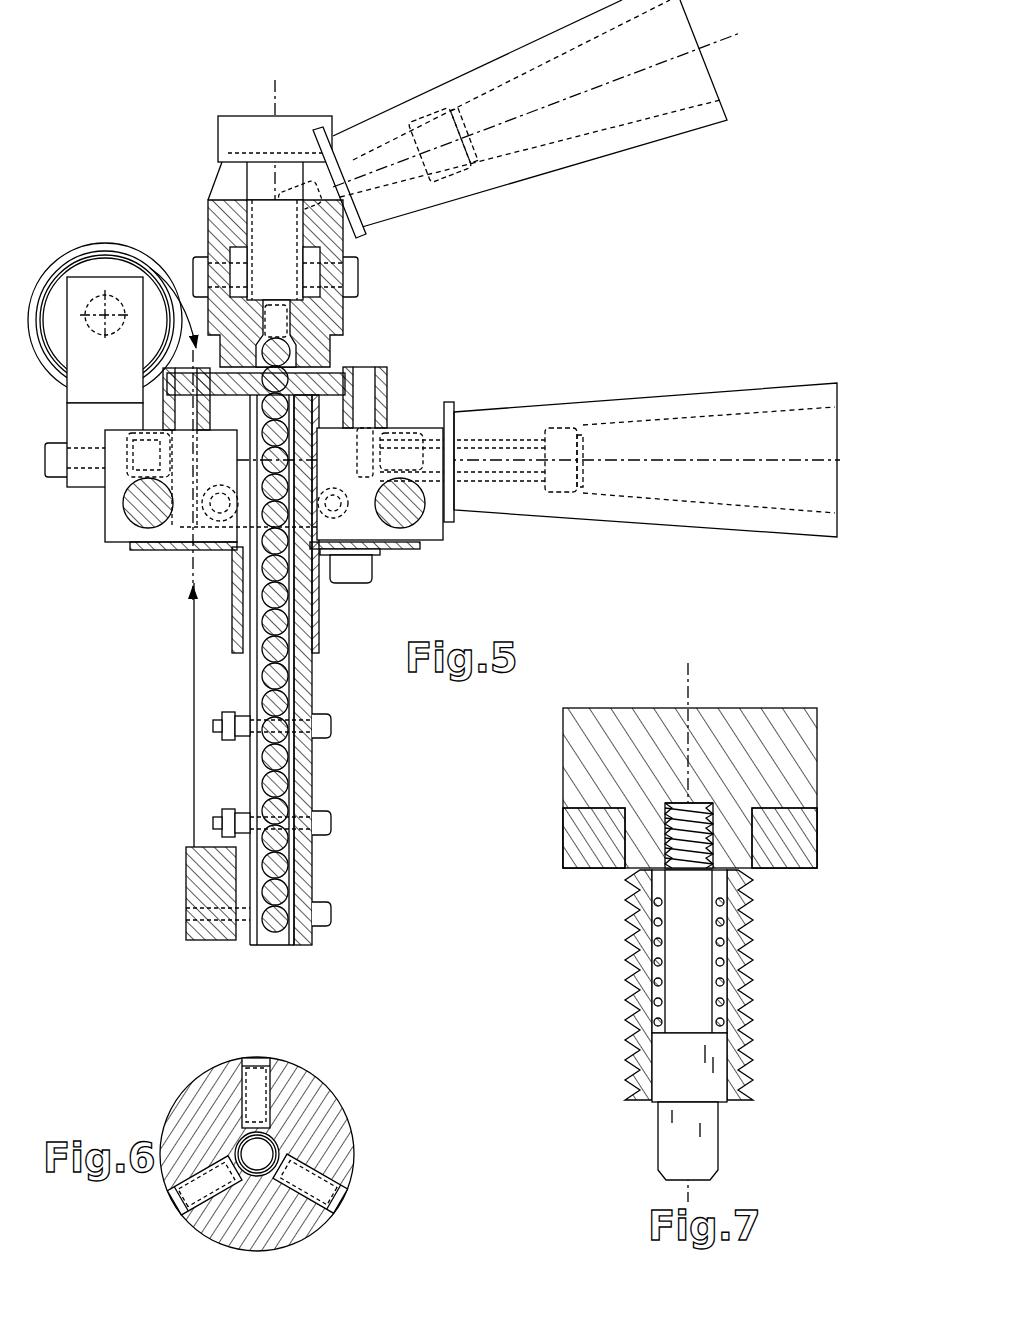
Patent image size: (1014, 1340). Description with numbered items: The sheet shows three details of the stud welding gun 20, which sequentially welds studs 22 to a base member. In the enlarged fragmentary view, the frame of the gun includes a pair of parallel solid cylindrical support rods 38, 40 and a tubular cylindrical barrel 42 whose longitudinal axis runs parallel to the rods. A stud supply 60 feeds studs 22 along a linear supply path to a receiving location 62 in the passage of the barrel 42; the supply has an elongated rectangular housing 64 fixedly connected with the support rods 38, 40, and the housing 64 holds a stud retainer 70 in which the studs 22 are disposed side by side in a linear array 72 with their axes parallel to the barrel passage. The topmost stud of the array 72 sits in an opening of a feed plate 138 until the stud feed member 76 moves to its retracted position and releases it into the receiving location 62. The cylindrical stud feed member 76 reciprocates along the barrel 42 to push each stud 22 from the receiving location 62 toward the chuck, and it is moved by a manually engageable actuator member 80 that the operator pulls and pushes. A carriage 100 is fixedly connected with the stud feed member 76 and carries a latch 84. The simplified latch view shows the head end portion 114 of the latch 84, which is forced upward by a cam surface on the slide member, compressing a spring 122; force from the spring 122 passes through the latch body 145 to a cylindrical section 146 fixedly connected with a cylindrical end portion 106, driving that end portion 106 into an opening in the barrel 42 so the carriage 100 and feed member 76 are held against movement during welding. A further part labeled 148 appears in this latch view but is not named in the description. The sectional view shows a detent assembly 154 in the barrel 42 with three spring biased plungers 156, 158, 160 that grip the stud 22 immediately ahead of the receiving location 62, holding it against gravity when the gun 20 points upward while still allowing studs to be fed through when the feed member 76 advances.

In FIG. 5, the stud welding gun 20 is at (358, 80).
In FIG. 5, the stud 22 is at (345, 378).
In FIG. 6, the stud 22 is at (275, 1135).
In FIG. 5, the support rod 38 is at (148, 528).
In FIG. 5, the support rod 40 is at (398, 528).
In FIG. 5, the barrel 42 is at (300, 325).
In FIG. 6, the barrel 42 is at (372, 1094).
In FIG. 5, the stud supply 60 is at (192, 818).
In FIG. 5, the receiving location 62 is at (292, 356).
In FIG. 5, the housing 64 is at (318, 867).
In FIG. 5, the stud retainer 70 is at (302, 690).
In FIG. 5, the linear array 72 is at (252, 768).
In FIG. 5, the stud feed member 76 is at (290, 340).
In FIG. 5, the actuator member 80 is at (630, 148).
In FIG. 7, the latch 84 is at (702, 776).
In FIG. 5, the carriage 100 is at (360, 272).
In FIG. 7, the end portion 106 is at (702, 1135).
In FIG. 7, the head end portion 114 is at (634, 720).
In FIG. 7, the spring 122 is at (724, 950).
In FIG. 5, the feed plate 138 is at (382, 390).
In FIG. 7, the latch body 145 is at (745, 1012).
In FIG. 7, the cylindrical section 146 is at (705, 1068).
In FIG. 7, the knob insert 148 is at (783, 868).
In FIG. 6, the detent assembly 154 is at (197, 1060).
In FIG. 6, the spring biased plunger 156 is at (258, 1058).
In FIG. 6, the spring biased plunger 158 is at (330, 1205).
In FIG. 6, the spring biased plunger 160 is at (190, 1202).